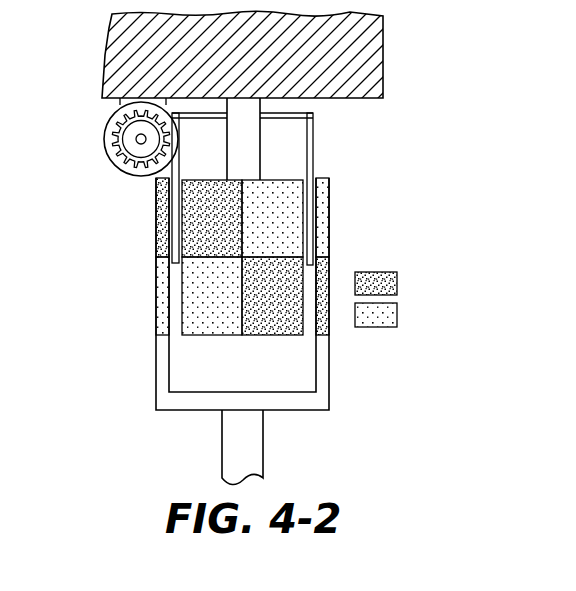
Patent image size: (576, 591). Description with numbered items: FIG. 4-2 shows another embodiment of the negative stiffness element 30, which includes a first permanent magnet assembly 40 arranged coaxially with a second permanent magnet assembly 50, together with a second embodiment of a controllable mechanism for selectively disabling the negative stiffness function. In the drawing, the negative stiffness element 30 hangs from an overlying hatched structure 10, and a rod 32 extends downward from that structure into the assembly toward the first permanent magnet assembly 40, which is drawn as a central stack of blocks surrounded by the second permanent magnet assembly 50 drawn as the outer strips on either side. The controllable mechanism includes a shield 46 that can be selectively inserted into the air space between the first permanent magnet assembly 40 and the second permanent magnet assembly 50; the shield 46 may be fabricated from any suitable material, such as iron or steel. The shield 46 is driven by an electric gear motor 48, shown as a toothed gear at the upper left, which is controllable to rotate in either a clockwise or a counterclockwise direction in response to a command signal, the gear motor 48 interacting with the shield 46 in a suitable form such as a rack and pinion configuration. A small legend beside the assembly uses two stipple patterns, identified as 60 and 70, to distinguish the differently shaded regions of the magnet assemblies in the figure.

The support structure 10 is at (120, 55).
The negative stiffness element 30 is at (130, 260).
The rod 32 is at (260, 163).
The first permanent magnet assembly 40 is at (210, 334).
The shield 46 is at (313, 165).
The electric gear motor 48 is at (105, 135).
The second permanent magnet assembly 50 is at (157, 225).
The first material 60 is at (394, 285).
The second material 70 is at (394, 317).